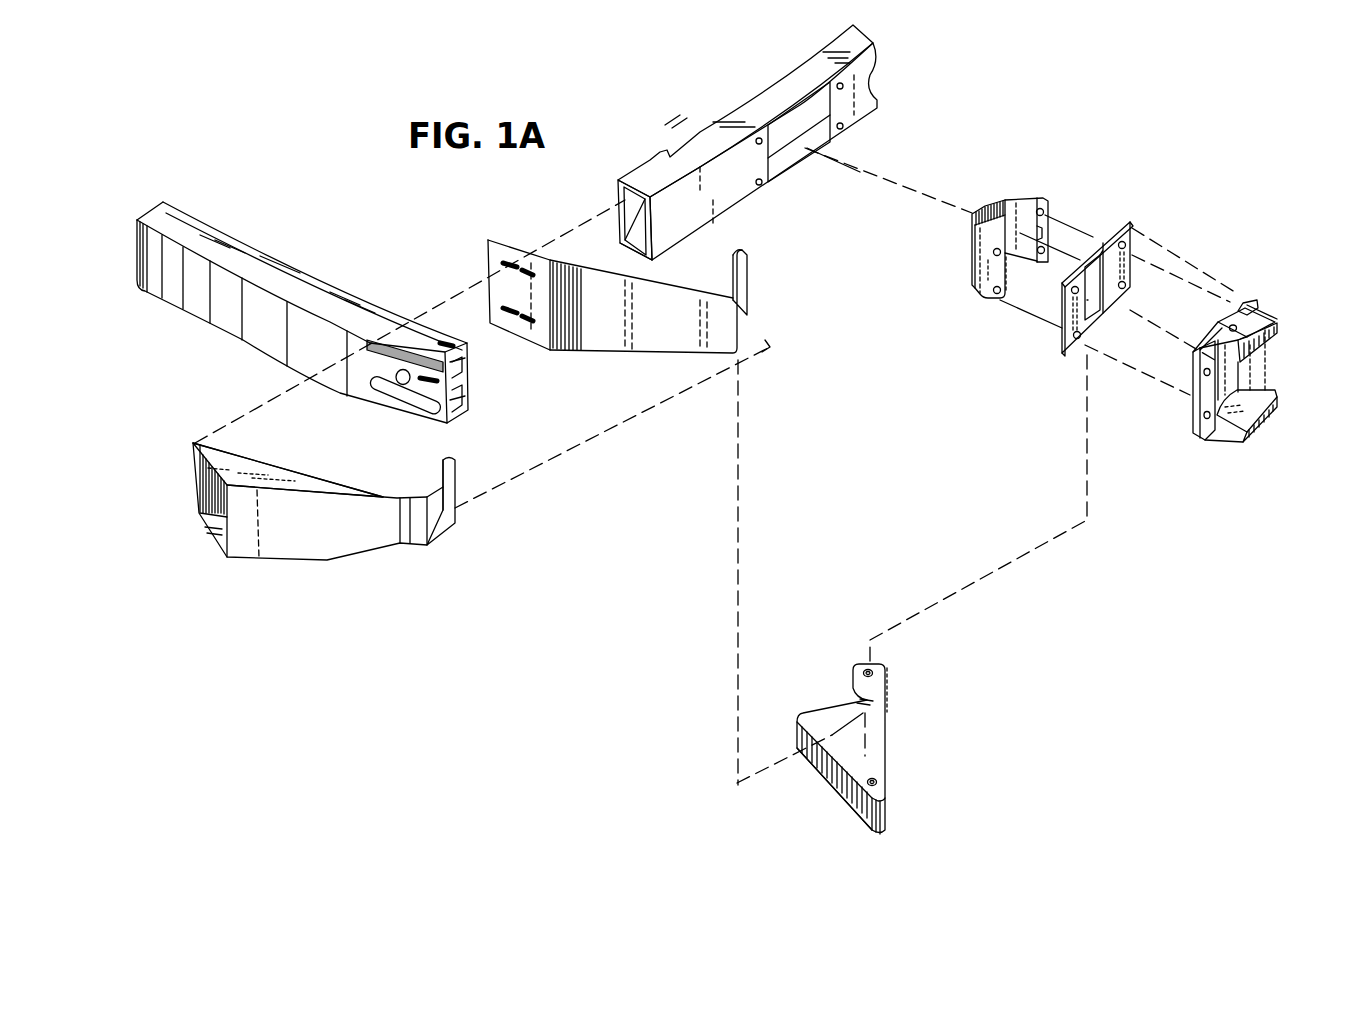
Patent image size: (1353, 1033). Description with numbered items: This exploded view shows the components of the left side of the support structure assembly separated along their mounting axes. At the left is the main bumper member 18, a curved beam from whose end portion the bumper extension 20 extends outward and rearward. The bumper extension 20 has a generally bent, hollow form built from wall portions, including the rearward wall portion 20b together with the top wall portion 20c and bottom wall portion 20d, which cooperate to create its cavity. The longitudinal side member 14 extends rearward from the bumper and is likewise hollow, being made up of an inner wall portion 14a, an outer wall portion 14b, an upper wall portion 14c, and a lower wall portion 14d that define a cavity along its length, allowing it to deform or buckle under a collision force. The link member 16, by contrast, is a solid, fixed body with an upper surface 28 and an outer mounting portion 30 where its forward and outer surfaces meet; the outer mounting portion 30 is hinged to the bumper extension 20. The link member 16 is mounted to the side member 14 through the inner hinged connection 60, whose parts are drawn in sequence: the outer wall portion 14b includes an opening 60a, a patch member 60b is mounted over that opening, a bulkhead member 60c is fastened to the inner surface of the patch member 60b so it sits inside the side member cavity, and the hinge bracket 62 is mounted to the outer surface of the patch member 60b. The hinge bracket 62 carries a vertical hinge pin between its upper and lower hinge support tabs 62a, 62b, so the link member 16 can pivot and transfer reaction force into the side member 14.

The longitudinal side member 14 is at (717, 151).
The inner wall portion 14a is at (620, 220).
The outer wall portion 14b is at (743, 183).
The upper wall portion 14c is at (733, 127).
The lower wall portion 14d is at (632, 258).
The link member 16 is at (867, 769).
The main bumper member 18 is at (197, 302).
The bumper extension 20 is at (470, 434).
The rearward wall portion 20b is at (610, 333).
The top wall portion 20c is at (300, 485).
The bottom wall portion 20d is at (297, 561).
The upper surface 28 is at (867, 700).
The outer mounting portion 30 is at (835, 807).
The inner hinged connection 60 is at (1181, 172).
The opening 60a is at (783, 147).
The patch member 60b is at (1123, 243).
The bulkhead member 60c is at (1015, 217).
The hinge bracket 62 is at (1266, 349).
The upper hinge support tab 62a is at (1277, 322).
The lower hinge support tab 62b is at (1275, 404).